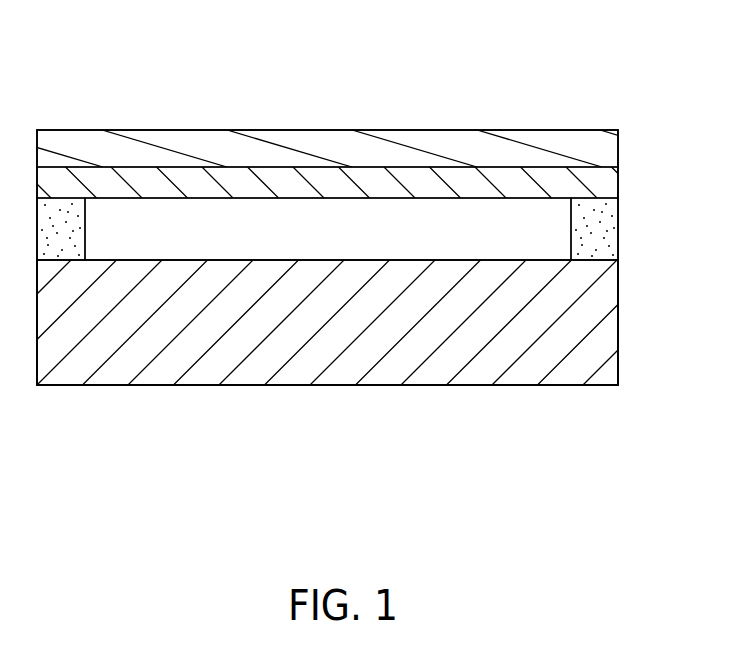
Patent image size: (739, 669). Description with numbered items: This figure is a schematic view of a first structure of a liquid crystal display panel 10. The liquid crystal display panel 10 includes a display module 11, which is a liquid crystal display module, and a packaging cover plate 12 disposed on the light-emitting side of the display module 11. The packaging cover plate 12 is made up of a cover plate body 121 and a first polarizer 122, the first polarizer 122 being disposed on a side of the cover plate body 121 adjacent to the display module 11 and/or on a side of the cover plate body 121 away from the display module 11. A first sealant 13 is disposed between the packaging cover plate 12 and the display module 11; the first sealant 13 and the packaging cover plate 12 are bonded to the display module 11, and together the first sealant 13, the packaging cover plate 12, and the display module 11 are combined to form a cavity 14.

The liquid crystal display panel 10 is at (110, 427).
The display module 11 is at (585, 317).
The packaging cover plate 12 is at (362, 102).
The cover plate body 121 is at (468, 155).
The first polarizer 122 is at (480, 50).
The first sealant 13 is at (590, 226).
The cavity 14 is at (302, 227).